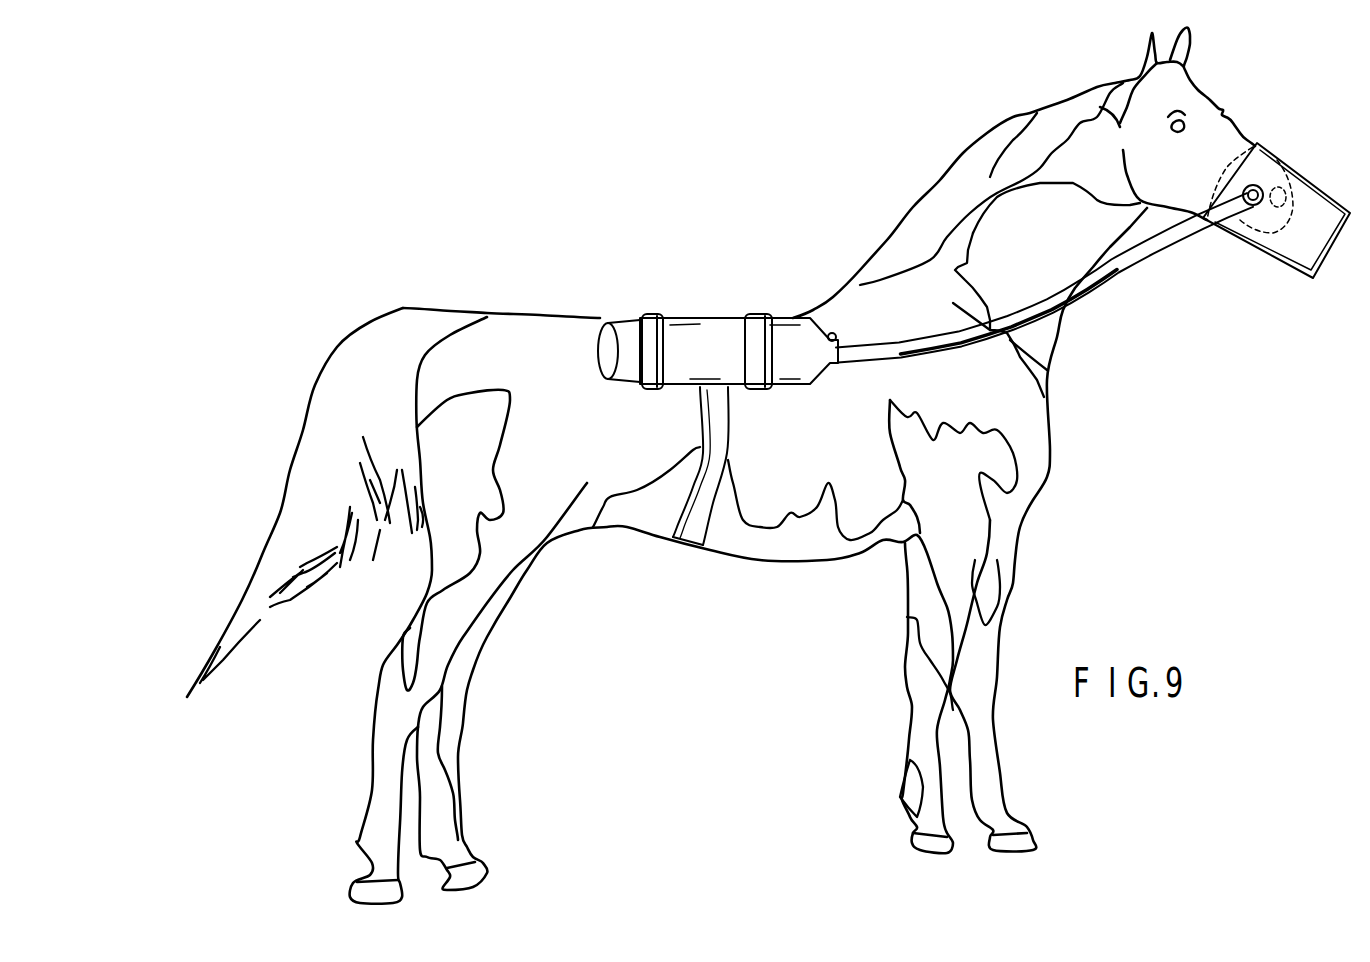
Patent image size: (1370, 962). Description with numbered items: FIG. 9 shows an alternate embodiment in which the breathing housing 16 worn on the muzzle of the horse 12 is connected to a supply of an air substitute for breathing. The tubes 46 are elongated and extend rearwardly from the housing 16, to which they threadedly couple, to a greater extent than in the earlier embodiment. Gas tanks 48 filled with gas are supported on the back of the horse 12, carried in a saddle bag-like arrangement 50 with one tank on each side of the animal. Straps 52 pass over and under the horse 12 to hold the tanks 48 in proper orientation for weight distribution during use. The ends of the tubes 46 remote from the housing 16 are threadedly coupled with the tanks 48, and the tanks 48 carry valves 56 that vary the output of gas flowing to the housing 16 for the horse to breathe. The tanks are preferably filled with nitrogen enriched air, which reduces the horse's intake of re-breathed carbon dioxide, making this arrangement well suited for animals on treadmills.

The horse 12 is at (1027, 397).
The housing 16 is at (1280, 253).
The tubes 46 is at (1130, 263).
The gas tanks 48 is at (702, 343).
The saddle bag-like arrangement 50 is at (648, 316).
The straps 52 is at (693, 537).
The valves 56 is at (838, 327).